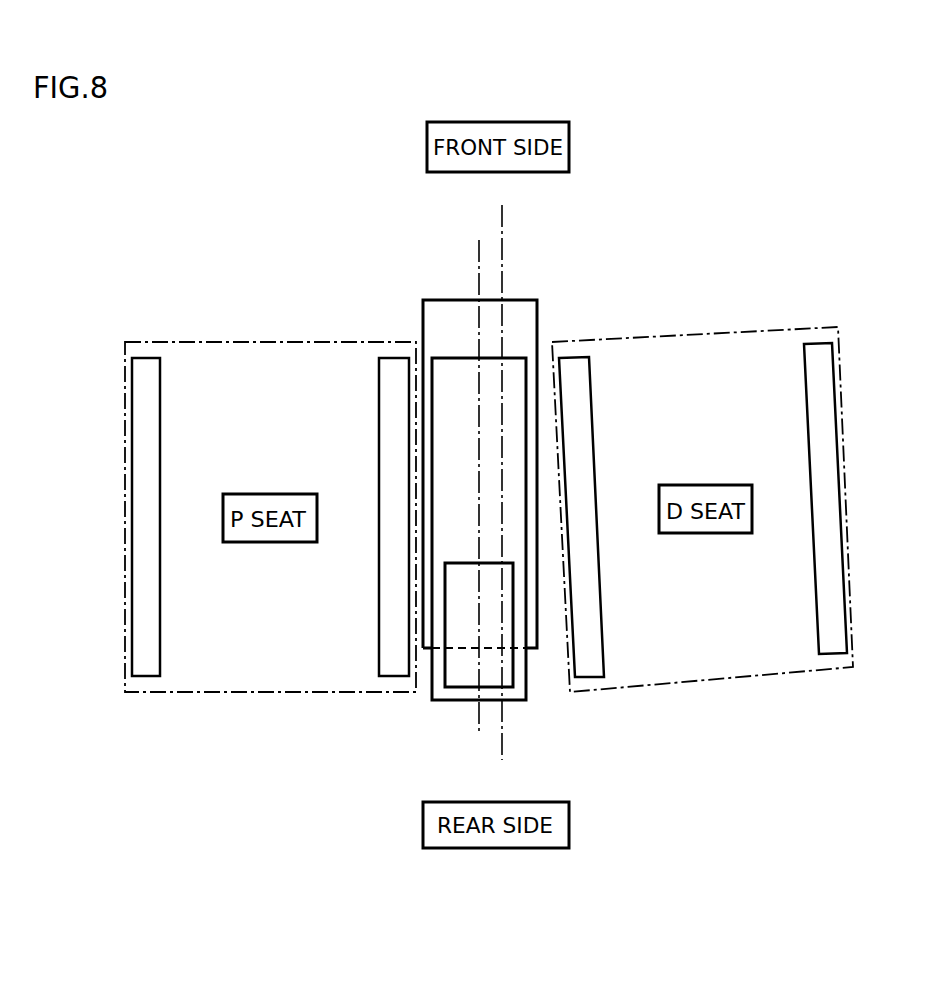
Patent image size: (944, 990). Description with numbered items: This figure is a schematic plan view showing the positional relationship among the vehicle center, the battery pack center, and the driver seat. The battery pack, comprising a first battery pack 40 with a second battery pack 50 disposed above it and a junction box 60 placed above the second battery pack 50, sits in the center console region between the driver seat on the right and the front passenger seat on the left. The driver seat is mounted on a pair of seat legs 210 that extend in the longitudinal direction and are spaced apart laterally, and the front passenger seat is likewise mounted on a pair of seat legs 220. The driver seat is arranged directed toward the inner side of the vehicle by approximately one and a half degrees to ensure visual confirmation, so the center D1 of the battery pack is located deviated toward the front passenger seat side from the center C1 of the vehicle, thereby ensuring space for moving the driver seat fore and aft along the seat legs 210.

The first battery pack 40 is at (442, 313).
The second battery pack 50 is at (515, 695).
The junction box 60 is at (462, 672).
The seat leg 210 is at (575, 372).
The seat leg 220 is at (147, 372).
The center of the vehicle C1 is at (502, 230).
The center of the battery pack D1 is at (479, 250).